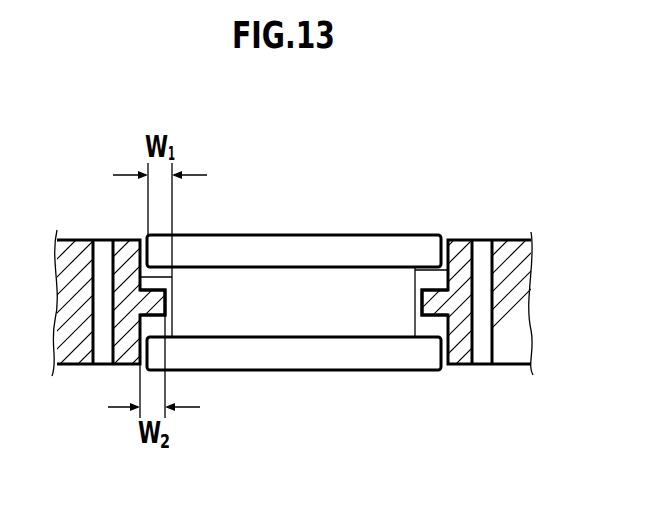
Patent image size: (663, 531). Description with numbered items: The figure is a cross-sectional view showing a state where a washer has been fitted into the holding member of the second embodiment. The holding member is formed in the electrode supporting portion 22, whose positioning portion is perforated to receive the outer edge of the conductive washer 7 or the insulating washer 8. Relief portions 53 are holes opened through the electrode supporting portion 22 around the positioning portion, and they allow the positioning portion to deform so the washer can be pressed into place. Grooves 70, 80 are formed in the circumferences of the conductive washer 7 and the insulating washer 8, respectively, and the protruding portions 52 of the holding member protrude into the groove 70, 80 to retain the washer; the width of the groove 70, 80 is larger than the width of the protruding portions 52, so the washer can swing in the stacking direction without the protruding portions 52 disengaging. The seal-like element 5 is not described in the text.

The electrode supporting portion 22 is at (73, 247).
The relief portions 53 is at (102, 232).
The protruding portions 52 is at (162, 305).
The seal member 5 is at (142, 278).
The conductive washer 7 is at (294, 203).
The insulating washer 8 is at (296, 236).
The groove 70 is at (317, 272).
The groove 80 is at (427, 258).